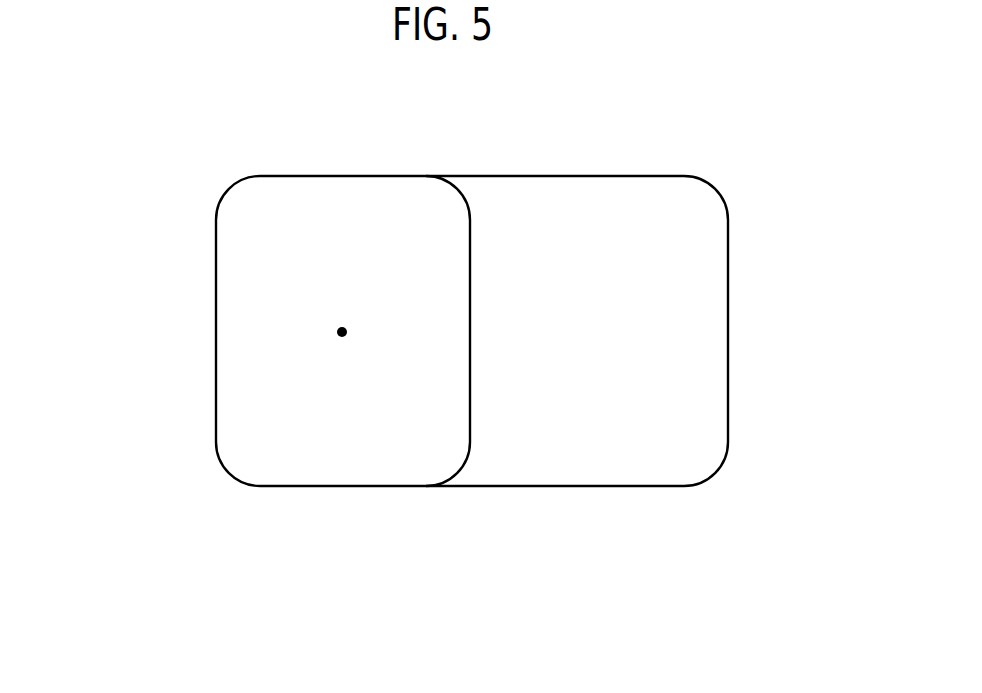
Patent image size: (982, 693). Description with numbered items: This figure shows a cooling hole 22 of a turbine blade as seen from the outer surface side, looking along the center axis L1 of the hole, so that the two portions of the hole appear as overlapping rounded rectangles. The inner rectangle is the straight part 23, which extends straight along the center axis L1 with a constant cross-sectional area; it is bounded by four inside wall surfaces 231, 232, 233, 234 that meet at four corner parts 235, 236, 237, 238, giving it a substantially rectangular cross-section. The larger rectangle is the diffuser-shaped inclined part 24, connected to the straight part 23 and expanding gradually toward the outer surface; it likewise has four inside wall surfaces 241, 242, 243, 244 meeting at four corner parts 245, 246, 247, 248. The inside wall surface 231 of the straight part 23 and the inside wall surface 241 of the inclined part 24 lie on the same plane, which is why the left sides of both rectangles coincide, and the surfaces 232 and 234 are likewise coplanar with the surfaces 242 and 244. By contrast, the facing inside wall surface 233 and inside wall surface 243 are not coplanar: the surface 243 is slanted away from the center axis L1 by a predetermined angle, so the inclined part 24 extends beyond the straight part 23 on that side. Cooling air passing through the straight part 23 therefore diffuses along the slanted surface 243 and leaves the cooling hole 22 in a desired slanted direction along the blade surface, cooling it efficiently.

The cooling hole 22 is at (459, 369).
The straight part 23 is at (301, 350).
The inclined part 24 is at (633, 350).
The inside wall surface 231 is at (165, 324).
The inside wall surface 232 is at (280, 486).
The inside wall surface 233 is at (470, 318).
The inside wall surface 234 is at (340, 176).
The corner part 235 is at (169, 488).
The corner part 236 is at (450, 478).
The corner part 237 is at (450, 186).
The corner part 238 is at (199, 164).
The inside wall surface 241 is at (215, 263).
The inside wall surface 242 is at (640, 486).
The inside wall surface 243 is at (727, 324).
The inside wall surface 244 is at (607, 176).
The corner part 245 is at (225, 465).
The corner part 246 is at (718, 468).
The corner part 247 is at (712, 183).
The corner part 248 is at (238, 180).
The center axis L1 is at (342, 332).